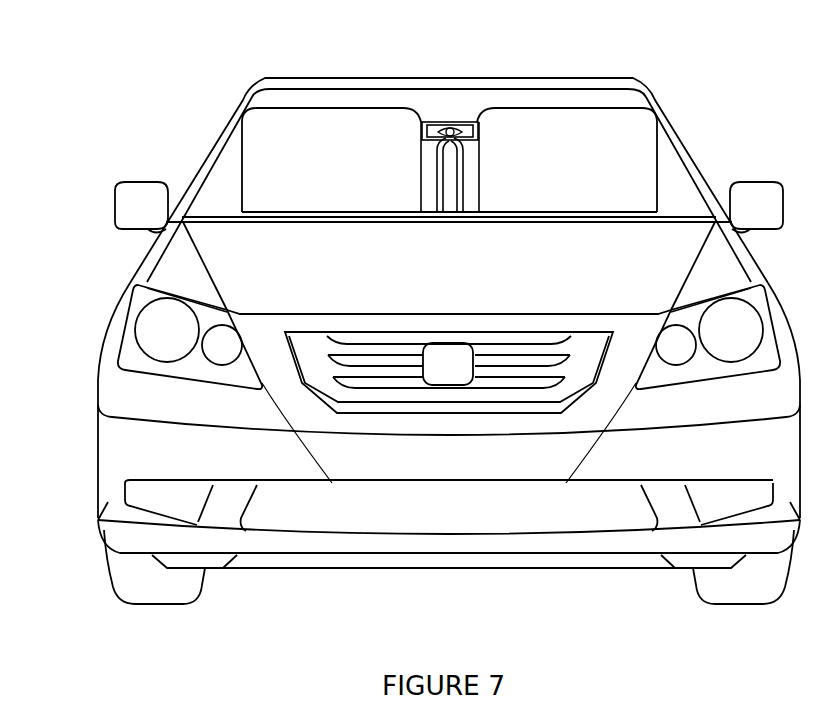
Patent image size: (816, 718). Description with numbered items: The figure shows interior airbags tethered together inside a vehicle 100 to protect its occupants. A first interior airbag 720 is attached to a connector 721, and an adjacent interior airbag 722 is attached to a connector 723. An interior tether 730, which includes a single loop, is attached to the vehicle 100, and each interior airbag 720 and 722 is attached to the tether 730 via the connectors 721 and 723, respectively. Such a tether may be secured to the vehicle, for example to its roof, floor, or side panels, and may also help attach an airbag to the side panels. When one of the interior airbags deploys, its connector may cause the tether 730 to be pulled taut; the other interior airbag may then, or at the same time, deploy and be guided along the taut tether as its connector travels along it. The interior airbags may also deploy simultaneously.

The vehicle 100 is at (118, 528).
The interior airbag 720 is at (620, 162).
The connector 721 is at (464, 121).
The interior airbag 722 is at (261, 128).
The connector 723 is at (428, 121).
The interior tether 730 is at (438, 197).